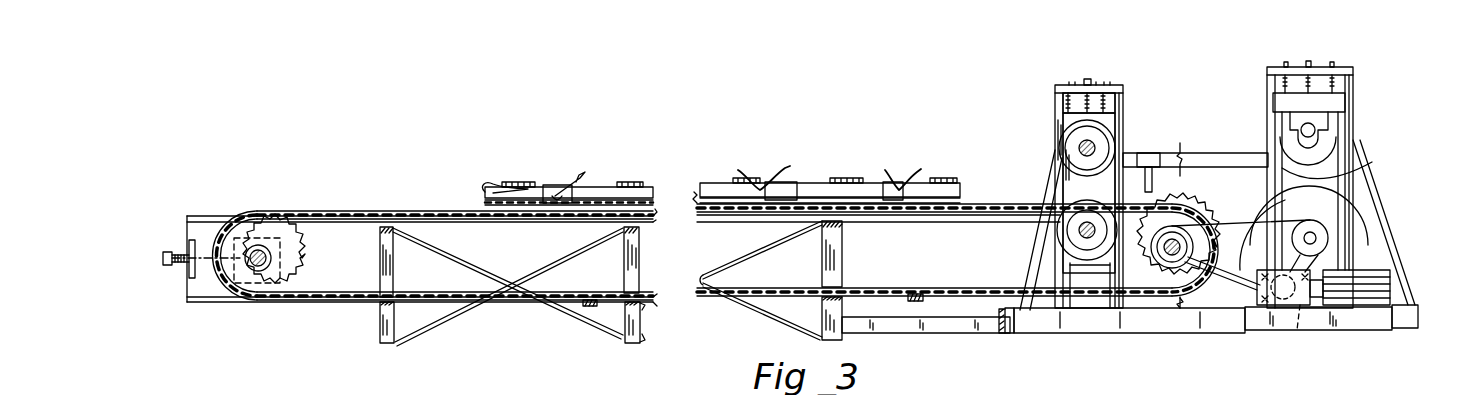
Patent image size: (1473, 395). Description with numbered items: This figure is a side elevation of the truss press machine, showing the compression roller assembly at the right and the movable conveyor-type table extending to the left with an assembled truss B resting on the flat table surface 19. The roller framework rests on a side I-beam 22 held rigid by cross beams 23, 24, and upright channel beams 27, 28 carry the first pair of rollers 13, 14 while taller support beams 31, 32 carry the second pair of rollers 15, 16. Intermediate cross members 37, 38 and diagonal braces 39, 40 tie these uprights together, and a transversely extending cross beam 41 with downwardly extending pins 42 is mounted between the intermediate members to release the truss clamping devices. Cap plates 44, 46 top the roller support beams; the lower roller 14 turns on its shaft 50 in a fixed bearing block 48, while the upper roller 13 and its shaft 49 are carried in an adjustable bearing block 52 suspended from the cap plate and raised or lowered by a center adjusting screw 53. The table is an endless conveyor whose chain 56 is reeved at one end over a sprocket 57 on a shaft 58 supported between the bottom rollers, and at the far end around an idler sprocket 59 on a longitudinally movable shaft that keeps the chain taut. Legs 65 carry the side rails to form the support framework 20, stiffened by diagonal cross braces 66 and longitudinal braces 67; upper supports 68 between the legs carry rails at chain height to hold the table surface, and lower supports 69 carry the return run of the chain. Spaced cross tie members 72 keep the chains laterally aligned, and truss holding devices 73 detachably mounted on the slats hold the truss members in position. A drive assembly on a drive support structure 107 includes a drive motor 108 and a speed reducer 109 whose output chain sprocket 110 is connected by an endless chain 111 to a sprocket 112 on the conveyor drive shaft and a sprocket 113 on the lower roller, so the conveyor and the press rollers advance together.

The upper roller 13 is at (1103, 138).
The lower roller 14 is at (1062, 240).
The roller 15 is at (1340, 133).
The lower roller 16 is at (1361, 168).
The table surface 19 is at (460, 207).
The support framework 20 is at (377, 325).
The I-beam 22 is at (1032, 333).
The cross beam 23 is at (1008, 330).
The cross beam 24 is at (1418, 315).
The channel beam 27 is at (1057, 110).
The channel beam 28 is at (1123, 100).
The support beam 31 is at (1270, 80).
The support beam 32 is at (1352, 88).
The intermediate cross member 37 is at (1208, 153).
The intermediate cross member 38 is at (1238, 278).
The diagonal brace 39 is at (1030, 266).
The diagonal brace 40 is at (1385, 240).
The cross beam 41 is at (1155, 155).
The pin 42 is at (1152, 182).
The cap plate 44 is at (1058, 88).
The cap plate 46 is at (1295, 72).
The fixed bearing block 48 is at (1105, 267).
The shaft 49 is at (1087, 148).
The shaft 50 is at (1087, 231).
The adjustable bearing block 52 is at (1115, 120).
The center adjusting screw 53 is at (1095, 60).
The endless chain 56 is at (336, 210).
The sprocket 57 is at (1185, 215).
The shaft 58 is at (1195, 240).
The idler sprocket 59 is at (275, 255).
The leg 65 is at (398, 335).
The diagonal cross brace 66 is at (455, 256).
The longitudinal brace 67 is at (918, 333).
The upper support 68 is at (390, 245).
The lower support 69 is at (641, 318).
The cross tie member 72 is at (583, 300).
The truss clamping device 73 is at (775, 190).
The drive support structure 107 is at (1268, 332).
The drive motor 108 is at (1380, 305).
The speed reducer 109 is at (1300, 305).
The chain sprocket 110 is at (1300, 305).
The endless chain 111 is at (1318, 222).
The sprocket 112 is at (1162, 265).
The sprocket 113 is at (1360, 212).
The truss B is at (607, 188).